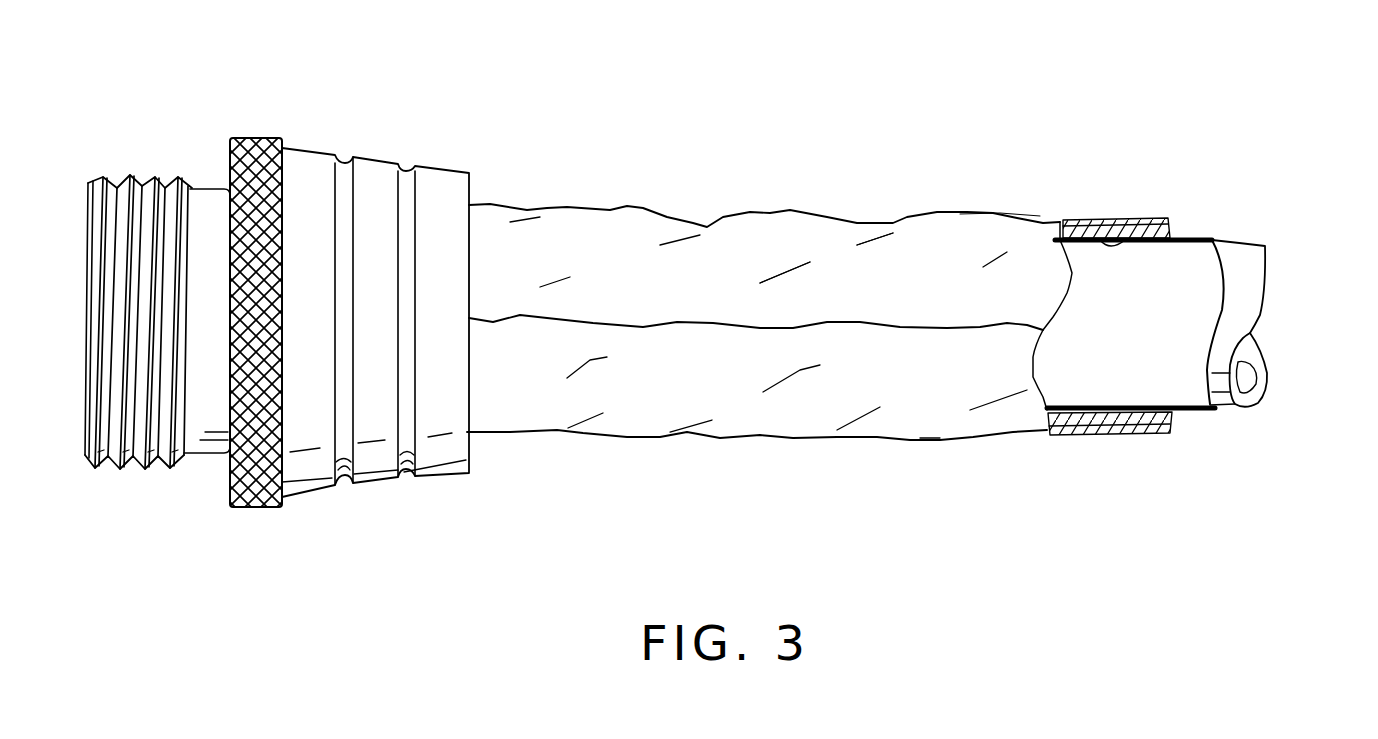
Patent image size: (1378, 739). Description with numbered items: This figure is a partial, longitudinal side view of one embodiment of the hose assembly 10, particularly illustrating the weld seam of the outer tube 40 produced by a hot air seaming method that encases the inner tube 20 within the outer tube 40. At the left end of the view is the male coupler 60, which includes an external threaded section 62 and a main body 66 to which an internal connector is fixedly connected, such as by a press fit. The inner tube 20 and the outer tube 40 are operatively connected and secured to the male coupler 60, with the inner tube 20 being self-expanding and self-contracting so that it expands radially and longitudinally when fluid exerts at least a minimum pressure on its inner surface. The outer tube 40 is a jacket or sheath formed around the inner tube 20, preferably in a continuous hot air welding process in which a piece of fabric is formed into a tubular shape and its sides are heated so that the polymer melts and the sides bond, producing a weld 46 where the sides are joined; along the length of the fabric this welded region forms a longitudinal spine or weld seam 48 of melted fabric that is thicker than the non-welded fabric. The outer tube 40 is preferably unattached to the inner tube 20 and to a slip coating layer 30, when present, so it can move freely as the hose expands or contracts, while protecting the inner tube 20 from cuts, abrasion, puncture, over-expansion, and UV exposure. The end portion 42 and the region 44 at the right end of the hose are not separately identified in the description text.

The hose assembly 10 is at (375, 297).
The inner tube 20 is at (1250, 250).
The slip coating layer 30 is at (1193, 410).
The outer tube 40 is at (626, 202).
The cuff / braided sleeve end 42 is at (1128, 238).
The outer jacket of hose 44 is at (1017, 220).
The weld 46 is at (802, 328).
The weld seam 48 is at (875, 239).
The male coupler 60 is at (220, 132).
The external threaded section 62 is at (136, 468).
The main body 66 is at (305, 472).